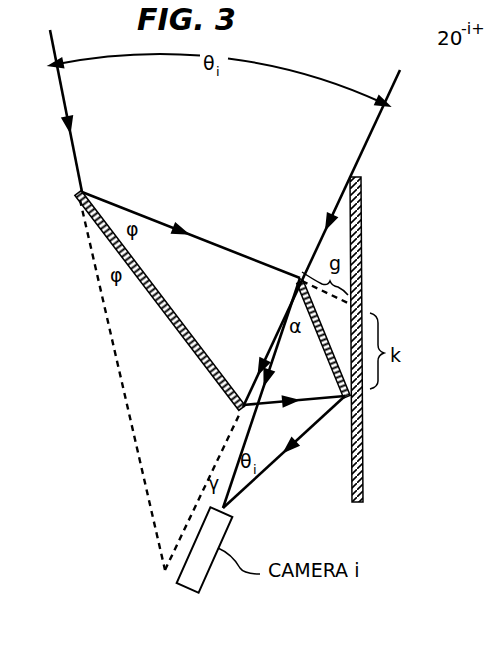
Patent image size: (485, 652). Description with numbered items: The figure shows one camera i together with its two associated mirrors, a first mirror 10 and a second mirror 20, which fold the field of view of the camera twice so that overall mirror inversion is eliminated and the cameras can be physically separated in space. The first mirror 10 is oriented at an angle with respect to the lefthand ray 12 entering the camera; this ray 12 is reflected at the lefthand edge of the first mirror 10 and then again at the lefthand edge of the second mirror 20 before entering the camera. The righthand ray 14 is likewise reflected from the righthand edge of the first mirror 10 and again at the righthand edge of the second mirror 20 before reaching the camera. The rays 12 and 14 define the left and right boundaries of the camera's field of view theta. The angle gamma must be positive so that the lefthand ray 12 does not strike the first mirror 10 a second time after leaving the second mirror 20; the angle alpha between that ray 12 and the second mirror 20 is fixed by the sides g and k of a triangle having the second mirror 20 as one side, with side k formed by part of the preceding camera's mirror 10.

The first mirror 10 is at (404, 246).
The lefthand ray 12 is at (80, 160).
The righthand ray 14 is at (362, 160).
The second mirror 20 is at (299, 272).